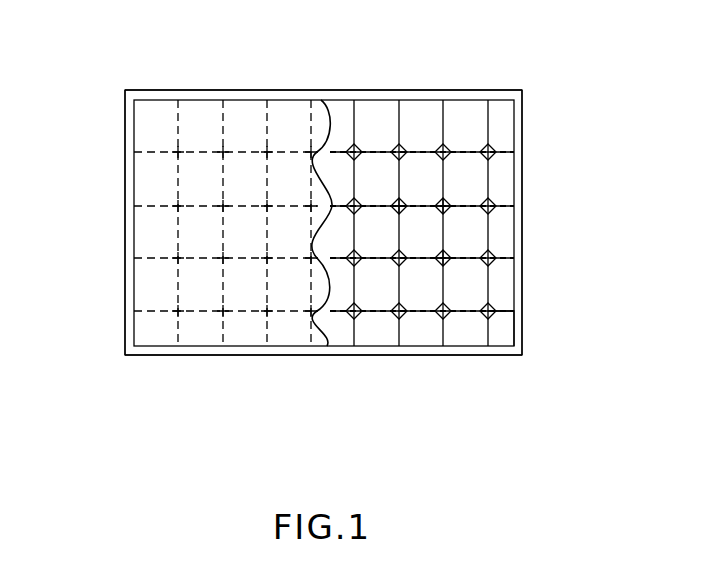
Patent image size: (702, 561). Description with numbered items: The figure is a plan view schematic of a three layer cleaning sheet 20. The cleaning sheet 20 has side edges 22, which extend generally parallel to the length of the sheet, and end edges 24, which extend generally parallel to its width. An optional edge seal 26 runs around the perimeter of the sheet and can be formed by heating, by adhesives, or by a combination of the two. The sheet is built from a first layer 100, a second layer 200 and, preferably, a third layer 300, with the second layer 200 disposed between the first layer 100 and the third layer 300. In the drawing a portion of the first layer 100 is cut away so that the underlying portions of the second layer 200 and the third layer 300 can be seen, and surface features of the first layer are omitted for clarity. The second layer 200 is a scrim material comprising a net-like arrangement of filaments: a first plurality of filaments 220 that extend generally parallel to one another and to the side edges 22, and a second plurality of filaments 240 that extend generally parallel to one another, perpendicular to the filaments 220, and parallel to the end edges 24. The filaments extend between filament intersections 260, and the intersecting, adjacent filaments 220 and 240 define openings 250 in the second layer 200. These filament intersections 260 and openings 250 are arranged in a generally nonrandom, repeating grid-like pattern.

The cleaning sheet 20 is at (505, 57).
The side edges 22 is at (245, 90).
The end edges 24 is at (125, 143).
The edge seal 26 is at (207, 90).
The first layer 100 is at (212, 338).
The second layer 200 is at (488, 249).
The first plurality of filaments 220 is at (503, 310).
The second plurality of filaments 240 is at (484, 122).
The openings 250 is at (455, 226).
The filament intersections 260 is at (497, 147).
The third layer 300 is at (508, 337).